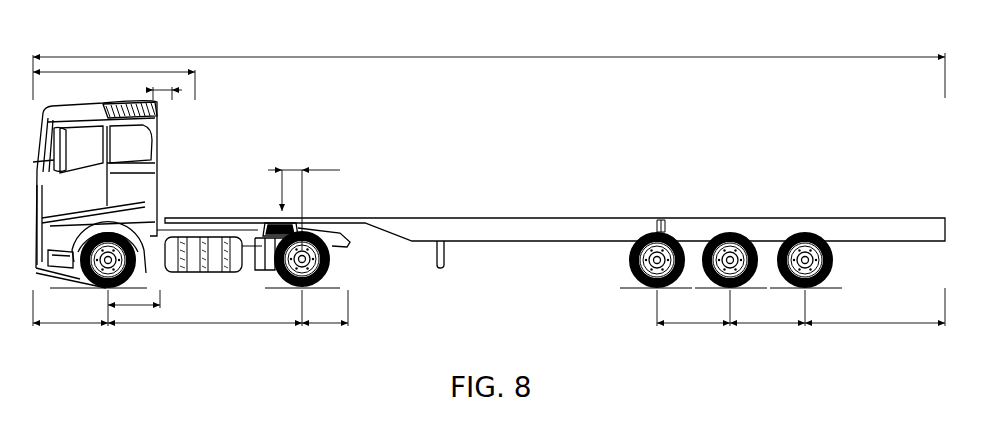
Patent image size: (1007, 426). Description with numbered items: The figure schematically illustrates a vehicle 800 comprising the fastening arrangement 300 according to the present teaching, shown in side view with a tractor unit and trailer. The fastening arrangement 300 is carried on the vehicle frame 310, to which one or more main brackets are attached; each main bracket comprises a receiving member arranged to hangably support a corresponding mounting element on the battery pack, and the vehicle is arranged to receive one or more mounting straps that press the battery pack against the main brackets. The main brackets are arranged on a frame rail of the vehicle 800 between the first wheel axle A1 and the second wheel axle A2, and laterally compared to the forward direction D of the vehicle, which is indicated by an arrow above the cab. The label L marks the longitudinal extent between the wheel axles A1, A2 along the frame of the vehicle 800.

The vehicle 800 is at (280, 70).
The fastening arrangement 300 is at (210, 229).
The vehicle frame 310 is at (252, 238).
The first wheel axle A1 is at (110, 262).
The second wheel axle A2 is at (302, 259).
The forward direction D is at (225, 37).
The wheelbase length L is at (207, 335).